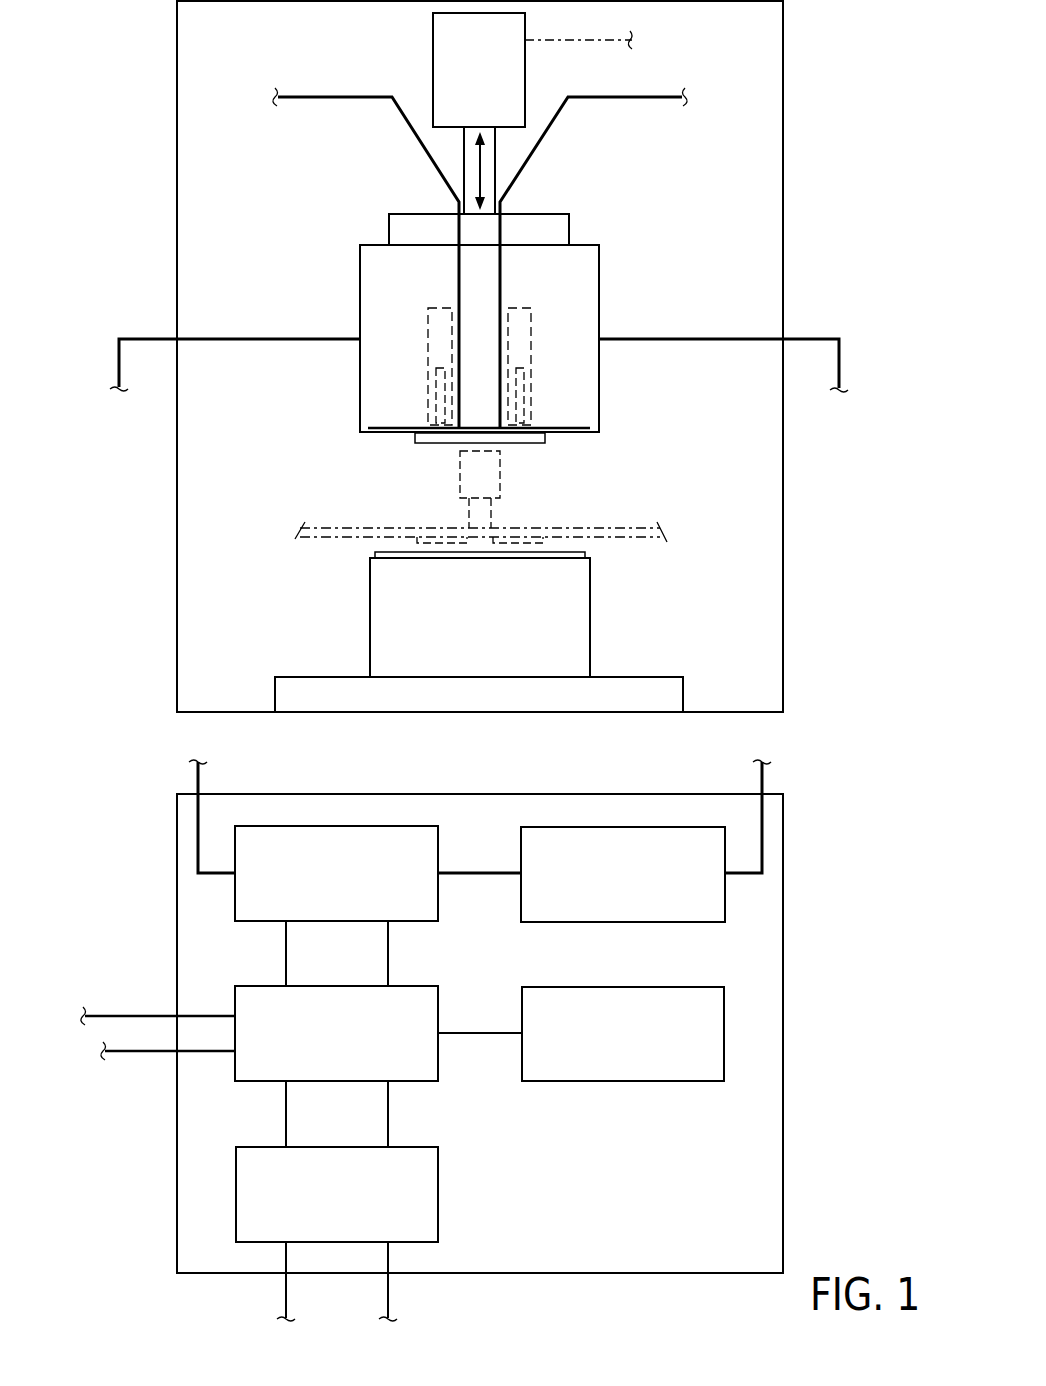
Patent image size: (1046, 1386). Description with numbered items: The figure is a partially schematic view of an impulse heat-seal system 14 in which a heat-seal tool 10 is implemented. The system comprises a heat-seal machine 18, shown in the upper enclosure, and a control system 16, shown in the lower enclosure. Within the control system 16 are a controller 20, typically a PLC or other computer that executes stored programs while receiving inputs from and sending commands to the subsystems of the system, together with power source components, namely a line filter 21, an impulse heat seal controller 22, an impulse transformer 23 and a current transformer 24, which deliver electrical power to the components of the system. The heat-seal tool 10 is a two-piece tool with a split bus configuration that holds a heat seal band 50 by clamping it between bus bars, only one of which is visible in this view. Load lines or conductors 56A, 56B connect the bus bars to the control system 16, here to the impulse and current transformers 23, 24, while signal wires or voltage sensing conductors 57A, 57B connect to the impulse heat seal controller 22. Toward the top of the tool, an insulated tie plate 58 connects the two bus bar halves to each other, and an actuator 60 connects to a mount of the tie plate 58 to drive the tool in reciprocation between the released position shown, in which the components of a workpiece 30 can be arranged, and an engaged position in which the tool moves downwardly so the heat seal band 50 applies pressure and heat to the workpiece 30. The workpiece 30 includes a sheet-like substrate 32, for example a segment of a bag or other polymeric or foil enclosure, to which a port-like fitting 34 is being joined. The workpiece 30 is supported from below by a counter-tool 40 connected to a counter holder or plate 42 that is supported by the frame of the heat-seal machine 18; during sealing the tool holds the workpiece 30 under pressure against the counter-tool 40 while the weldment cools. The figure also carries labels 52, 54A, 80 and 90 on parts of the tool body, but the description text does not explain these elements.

The heat-seal tool 10 is at (550, 441).
The impulse heat-seal system 14 is at (832, 604).
The control system 16 is at (802, 1111).
The heat-seal machine 18 is at (738, 87).
The controller 20 is at (520, 1010).
The line filter 21 is at (438, 1193).
The impulse heat seal controller 22 is at (438, 1057).
The impulse transformer 23 is at (438, 897).
The current transformer 24 is at (520, 850).
The workpiece 30 is at (624, 543).
The sheet-like substrate 32 is at (619, 526).
The fitting 34 is at (492, 508).
The counter-tool 40 is at (385, 612).
The counter holder or plate 42 is at (283, 690).
The heat seal band 50 is at (374, 240).
The jaw body 52 is at (580, 261).
The cavity 54A is at (590, 278).
The load line conductor 56A is at (808, 338).
The load line conductor 56B is at (153, 338).
The voltage sensing conductor 57A is at (655, 97).
The voltage sensing conductor 57B is at (333, 97).
The insulated tie plate 58 is at (422, 220).
The actuator 60 is at (492, 84).
The clamp 80 is at (537, 393).
The insulator 90 is at (424, 401).